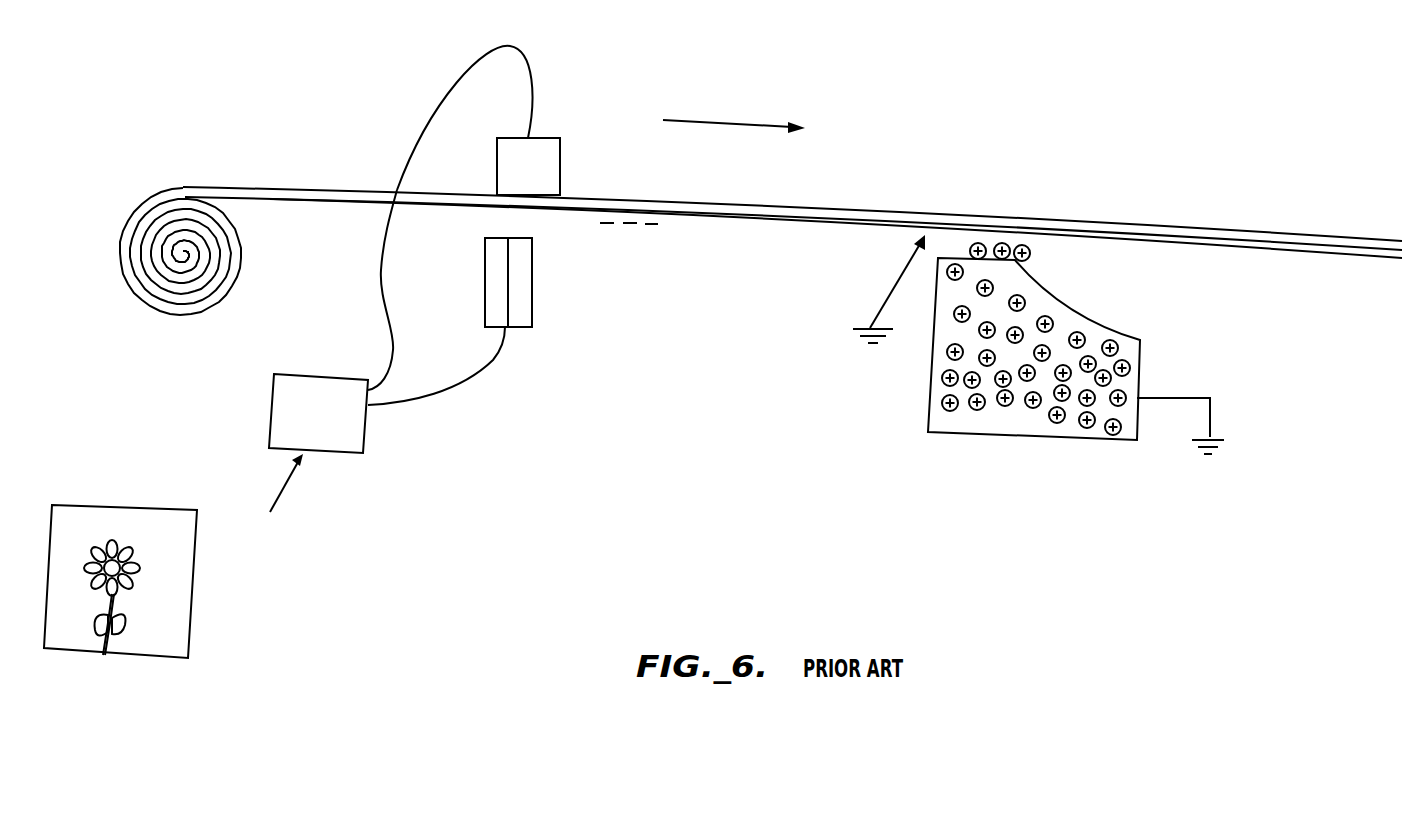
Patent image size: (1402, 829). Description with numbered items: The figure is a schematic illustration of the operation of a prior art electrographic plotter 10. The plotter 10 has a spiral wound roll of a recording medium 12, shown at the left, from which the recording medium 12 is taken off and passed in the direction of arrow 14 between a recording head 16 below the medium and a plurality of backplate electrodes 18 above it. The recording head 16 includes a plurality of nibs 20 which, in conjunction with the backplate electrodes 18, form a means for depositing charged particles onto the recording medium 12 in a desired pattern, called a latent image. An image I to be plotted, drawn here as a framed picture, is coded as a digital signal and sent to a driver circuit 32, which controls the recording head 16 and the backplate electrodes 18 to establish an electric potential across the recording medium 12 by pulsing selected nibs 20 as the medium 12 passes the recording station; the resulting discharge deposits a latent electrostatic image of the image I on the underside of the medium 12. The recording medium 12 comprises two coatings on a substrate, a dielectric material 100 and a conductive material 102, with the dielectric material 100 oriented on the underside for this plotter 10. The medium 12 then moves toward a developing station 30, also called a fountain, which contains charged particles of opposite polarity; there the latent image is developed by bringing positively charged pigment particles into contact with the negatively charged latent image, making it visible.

The electrographic plotter 10 is at (884, 70).
The recording medium 12 is at (278, 187).
The arrow 14 is at (733, 122).
The recording head 16 is at (532, 268).
The backplate electrodes 18 is at (560, 164).
The nibs 20 is at (485, 270).
The developing station 30 is at (1075, 307).
The driver circuit 32 is at (336, 430).
The dielectric material 100 is at (729, 227).
The conductive material 102 is at (741, 186).
The image I is at (194, 577).